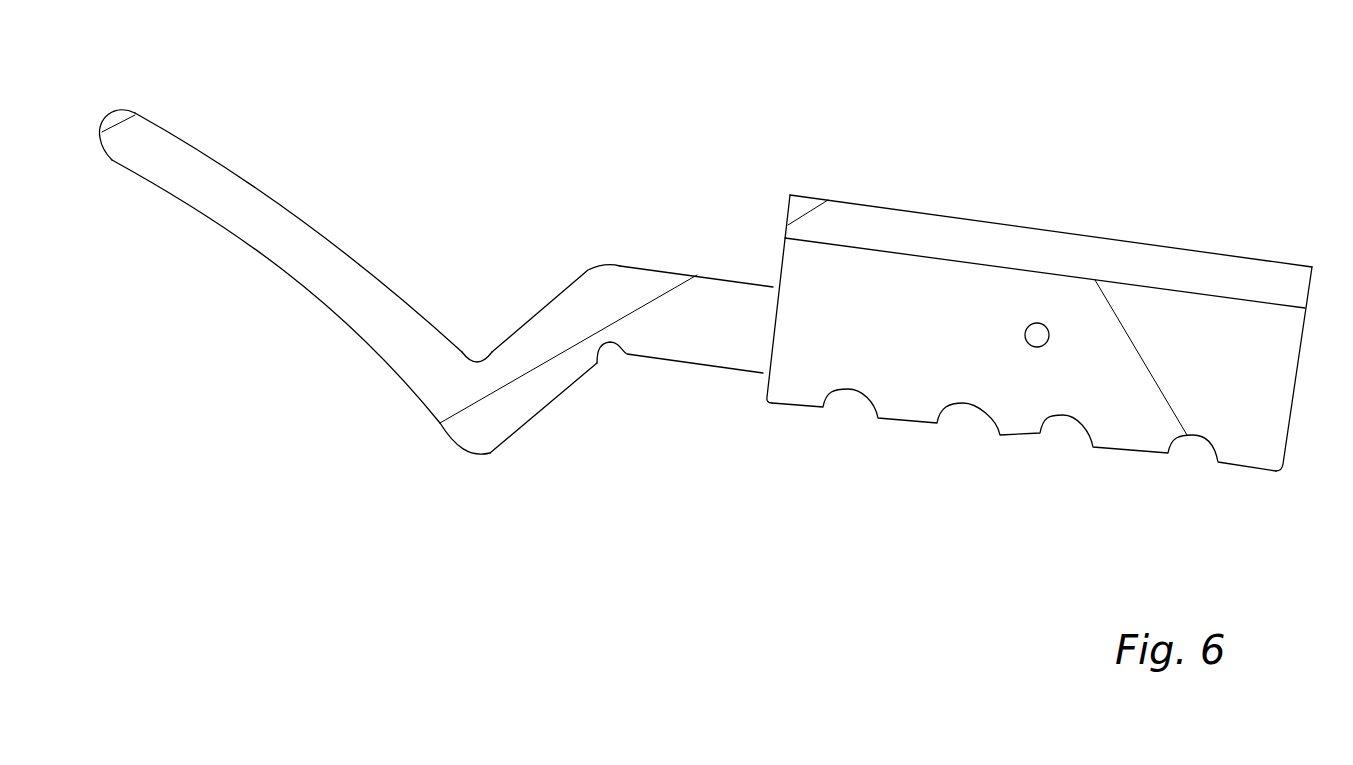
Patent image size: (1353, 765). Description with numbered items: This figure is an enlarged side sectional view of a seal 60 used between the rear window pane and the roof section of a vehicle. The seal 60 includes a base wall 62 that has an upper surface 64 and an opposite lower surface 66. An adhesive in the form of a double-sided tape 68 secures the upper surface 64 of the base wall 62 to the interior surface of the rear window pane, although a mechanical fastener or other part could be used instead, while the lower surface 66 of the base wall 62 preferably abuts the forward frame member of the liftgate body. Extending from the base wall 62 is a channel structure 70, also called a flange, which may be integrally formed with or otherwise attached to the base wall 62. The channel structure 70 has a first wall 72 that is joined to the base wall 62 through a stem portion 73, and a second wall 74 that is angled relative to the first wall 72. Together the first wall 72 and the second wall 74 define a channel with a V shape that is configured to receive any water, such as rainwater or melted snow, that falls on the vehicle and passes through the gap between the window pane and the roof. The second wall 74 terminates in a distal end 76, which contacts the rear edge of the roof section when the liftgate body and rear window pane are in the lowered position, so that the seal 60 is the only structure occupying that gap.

The seal 60 is at (1118, 199).
The base wall 62 is at (1142, 407).
The upper surface 64 is at (972, 263).
The lower surface 66 is at (1020, 438).
The double-sided tape 68 is at (918, 232).
The channel structure 70 is at (453, 458).
The first wall 72 is at (538, 392).
The stem portion 73 is at (650, 350).
The second wall 74 is at (348, 302).
The distal end 76 is at (103, 126).